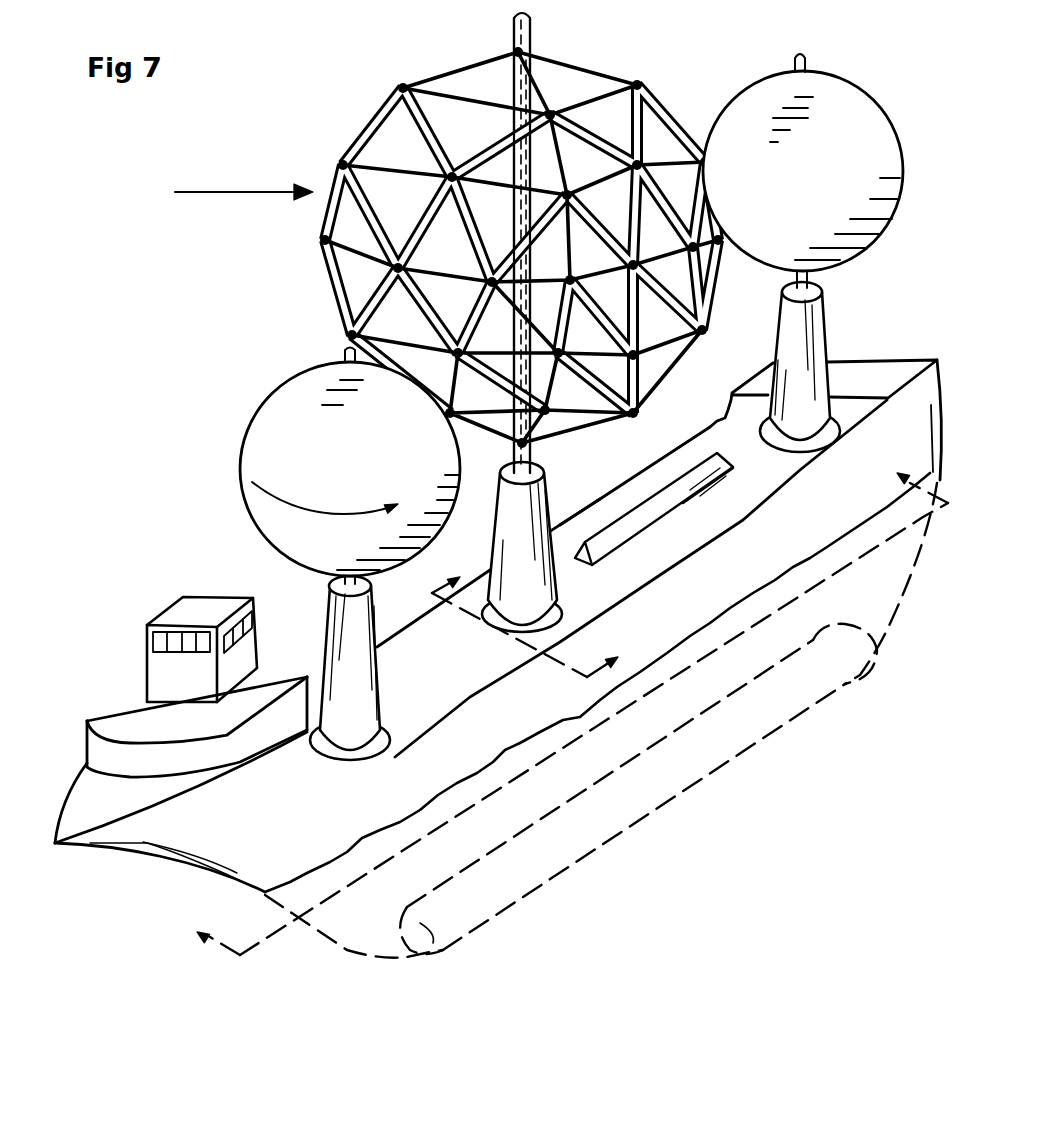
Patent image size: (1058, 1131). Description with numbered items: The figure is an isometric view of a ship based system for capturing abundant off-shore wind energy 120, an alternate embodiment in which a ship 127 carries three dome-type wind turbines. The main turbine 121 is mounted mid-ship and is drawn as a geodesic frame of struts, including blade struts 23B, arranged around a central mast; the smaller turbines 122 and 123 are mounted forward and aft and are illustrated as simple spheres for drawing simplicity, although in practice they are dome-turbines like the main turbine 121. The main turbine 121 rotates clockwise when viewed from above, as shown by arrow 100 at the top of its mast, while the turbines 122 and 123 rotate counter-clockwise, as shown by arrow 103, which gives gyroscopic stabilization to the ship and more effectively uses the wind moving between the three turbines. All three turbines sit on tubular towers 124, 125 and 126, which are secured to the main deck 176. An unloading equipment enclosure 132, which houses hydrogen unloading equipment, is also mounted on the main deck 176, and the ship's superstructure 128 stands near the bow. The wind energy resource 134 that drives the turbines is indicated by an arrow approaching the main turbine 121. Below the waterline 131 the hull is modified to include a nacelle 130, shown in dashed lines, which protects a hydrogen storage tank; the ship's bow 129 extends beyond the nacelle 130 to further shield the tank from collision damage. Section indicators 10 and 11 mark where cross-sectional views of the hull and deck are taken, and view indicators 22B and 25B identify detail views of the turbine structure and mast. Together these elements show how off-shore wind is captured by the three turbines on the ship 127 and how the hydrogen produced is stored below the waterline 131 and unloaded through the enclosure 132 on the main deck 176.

The ship based system for capturing abundant off-shore wind energy 120 is at (184, 299).
The arrow 100 is at (530, 40).
The main turbine 121 is at (398, 130).
The turbine 122 is at (267, 438).
The turbine 123 is at (752, 100).
The tubular tower 124 is at (517, 503).
The tubular tower 125 is at (335, 625).
The tubular tower 126 is at (800, 318).
The ship 127 is at (125, 722).
The cabin 128 is at (185, 608).
The bow 129 is at (145, 860).
The nacelle 130 is at (413, 962).
The waterline 131 is at (803, 566).
The unloading equipment enclosure 132 is at (686, 492).
The wind energy resource 134 is at (216, 196).
The arrow 103 is at (237, 480).
The main deck 176 is at (430, 678).
The section line 10 is at (559, 698).
The section line 11 is at (541, 613).
The view indicator 22B is at (220, 121).
The blade strut 23B is at (285, 301).
The view indicator 25B is at (515, 15).